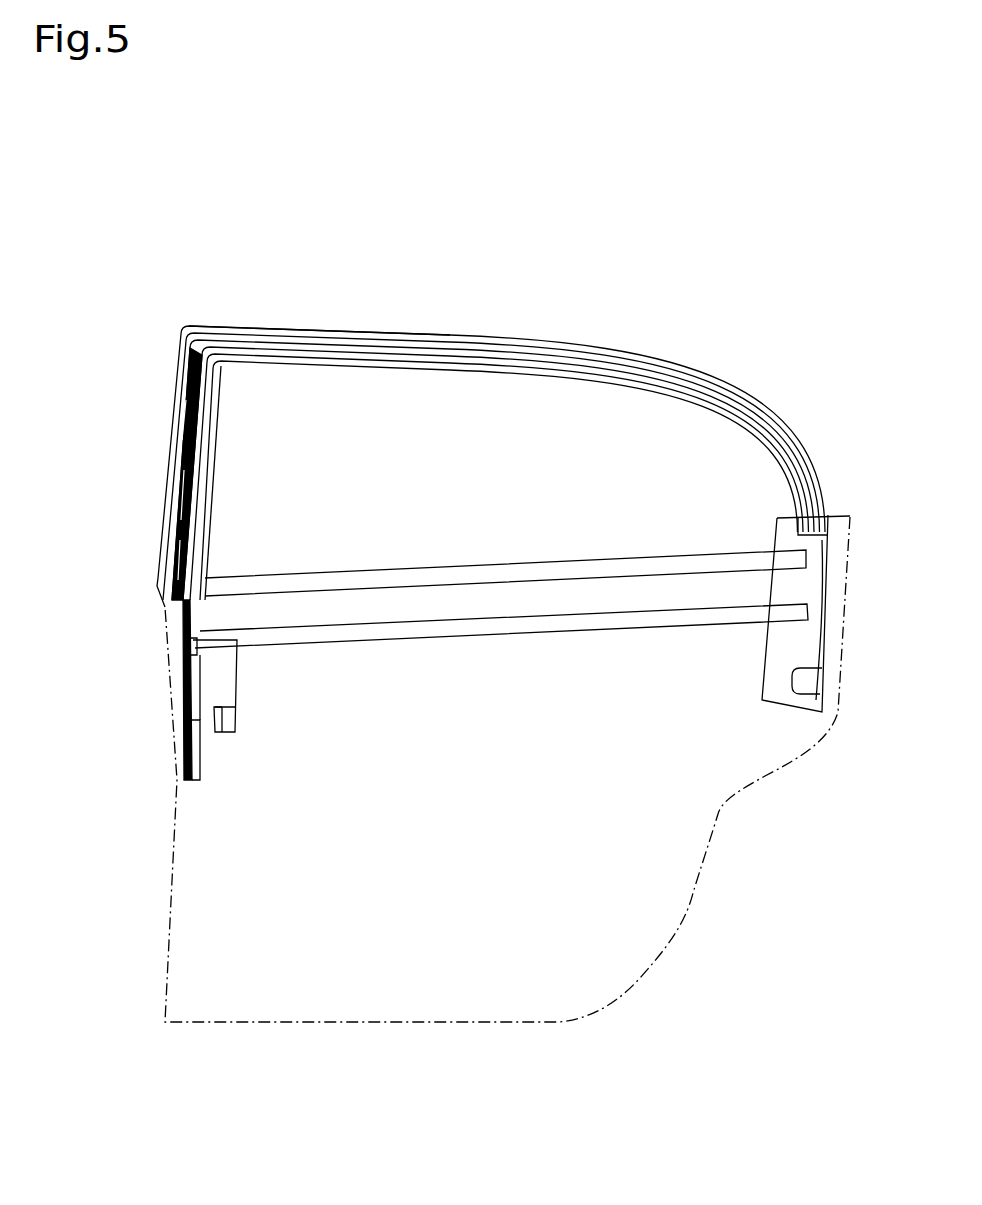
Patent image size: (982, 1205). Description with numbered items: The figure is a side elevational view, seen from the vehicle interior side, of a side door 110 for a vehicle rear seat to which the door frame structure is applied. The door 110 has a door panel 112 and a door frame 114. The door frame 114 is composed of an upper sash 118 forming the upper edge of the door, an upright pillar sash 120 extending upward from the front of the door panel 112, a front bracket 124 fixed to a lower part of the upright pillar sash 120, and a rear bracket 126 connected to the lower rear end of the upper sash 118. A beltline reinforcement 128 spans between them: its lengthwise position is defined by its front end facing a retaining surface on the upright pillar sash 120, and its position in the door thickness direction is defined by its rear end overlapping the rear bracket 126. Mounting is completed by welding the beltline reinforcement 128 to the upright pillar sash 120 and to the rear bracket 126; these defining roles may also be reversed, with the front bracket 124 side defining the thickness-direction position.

The side door 110 is at (162, 317).
The door panel 112 is at (668, 888).
The door frame 114 is at (598, 347).
The upper sash 118 is at (535, 358).
The upright pillar sash 120 is at (187, 403).
The front bracket 124 is at (215, 680).
The rear bracket 126 is at (830, 517).
The beltline reinforcement 128 is at (428, 640).